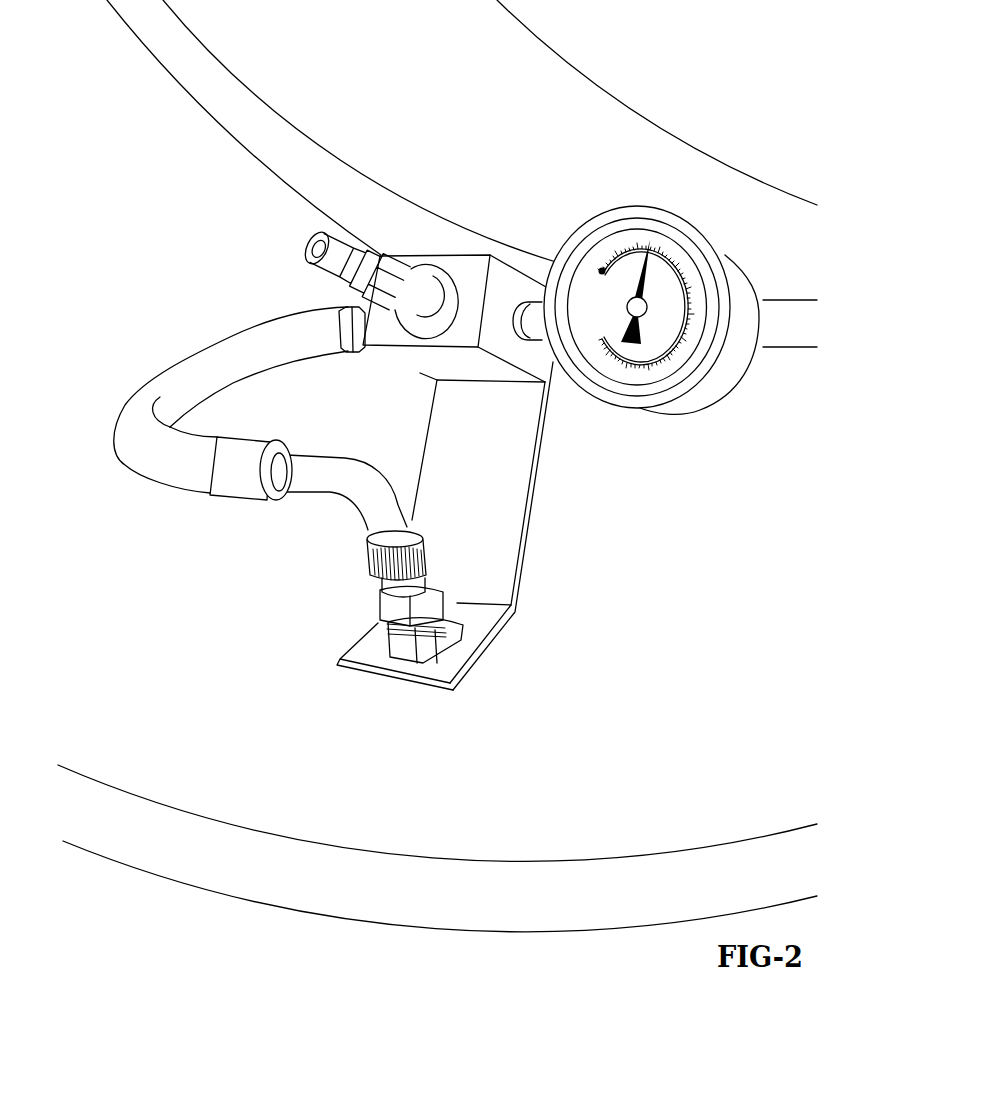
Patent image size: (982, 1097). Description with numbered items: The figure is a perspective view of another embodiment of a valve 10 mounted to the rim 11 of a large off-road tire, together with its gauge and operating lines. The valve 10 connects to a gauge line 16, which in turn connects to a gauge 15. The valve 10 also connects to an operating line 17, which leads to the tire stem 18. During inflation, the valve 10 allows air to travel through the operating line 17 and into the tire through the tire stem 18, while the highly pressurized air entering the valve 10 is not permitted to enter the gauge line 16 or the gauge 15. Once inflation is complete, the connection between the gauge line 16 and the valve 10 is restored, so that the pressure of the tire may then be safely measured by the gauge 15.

The valve 10 is at (302, 246).
The rim 11 is at (202, 161).
The gauge 15 is at (630, 213).
The gauge line 16 is at (530, 260).
The operating line 17 is at (282, 327).
The tire stem 18 is at (390, 587).